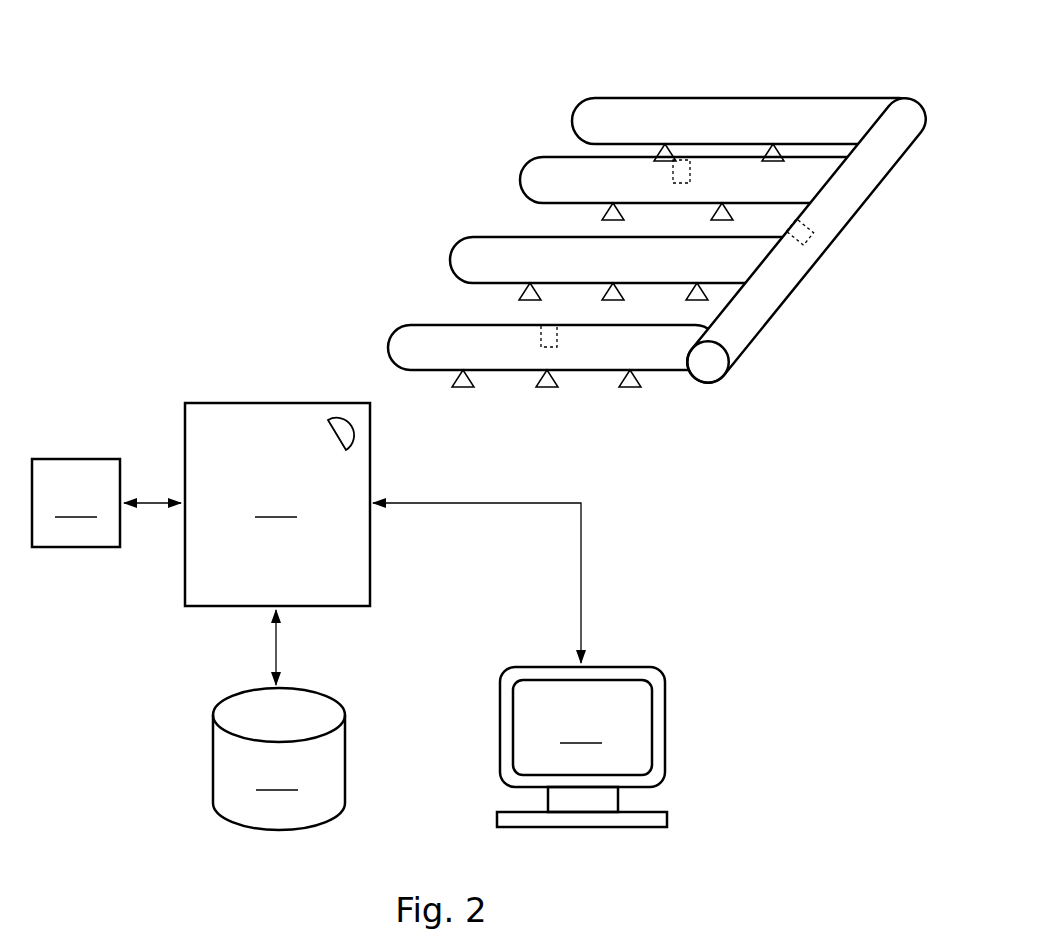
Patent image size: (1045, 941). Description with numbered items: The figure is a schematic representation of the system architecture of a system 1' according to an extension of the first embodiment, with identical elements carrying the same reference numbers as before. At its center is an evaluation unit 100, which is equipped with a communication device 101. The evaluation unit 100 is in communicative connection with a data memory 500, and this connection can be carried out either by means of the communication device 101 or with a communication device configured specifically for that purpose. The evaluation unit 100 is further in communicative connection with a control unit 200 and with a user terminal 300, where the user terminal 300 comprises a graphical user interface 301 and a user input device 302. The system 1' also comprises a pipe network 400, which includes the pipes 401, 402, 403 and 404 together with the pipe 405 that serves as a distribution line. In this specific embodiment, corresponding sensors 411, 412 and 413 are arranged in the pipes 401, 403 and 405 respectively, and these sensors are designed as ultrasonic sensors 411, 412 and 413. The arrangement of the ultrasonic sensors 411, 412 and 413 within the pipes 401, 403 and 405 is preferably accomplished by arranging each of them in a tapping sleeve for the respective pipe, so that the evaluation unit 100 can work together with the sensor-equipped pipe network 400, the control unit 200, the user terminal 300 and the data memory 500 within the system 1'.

The system 1' is at (490, 469).
The evaluation unit 100 is at (348, 504).
The communication device 101 is at (367, 426).
The control unit 200 is at (76, 503).
The user terminal 300 is at (644, 782).
The graphical user interface 301 is at (655, 748).
The user input device 302 is at (670, 822).
The pipe network 400 is at (840, 288).
The pipe 401 is at (503, 374).
The pipe 402 is at (450, 261).
The pipe 403 is at (649, 132).
The pipe 404 is at (570, 121).
The pipe 405 is at (818, 270).
The ultrasonic sensor 411 is at (562, 345).
The ultrasonic sensor 412 is at (687, 150).
The ultrasonic sensor 413 is at (817, 232).
The data memory 500 is at (279, 759).